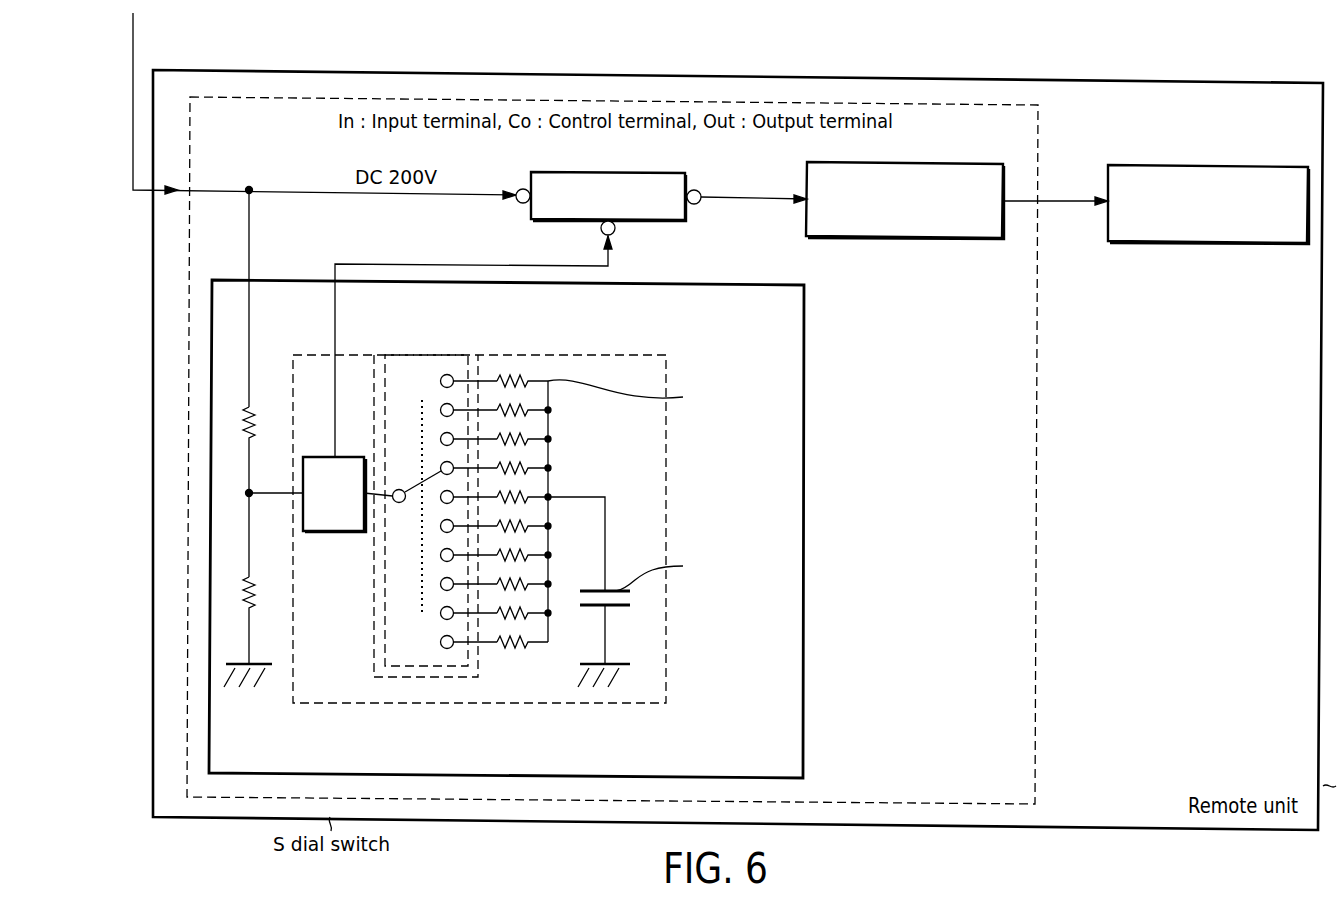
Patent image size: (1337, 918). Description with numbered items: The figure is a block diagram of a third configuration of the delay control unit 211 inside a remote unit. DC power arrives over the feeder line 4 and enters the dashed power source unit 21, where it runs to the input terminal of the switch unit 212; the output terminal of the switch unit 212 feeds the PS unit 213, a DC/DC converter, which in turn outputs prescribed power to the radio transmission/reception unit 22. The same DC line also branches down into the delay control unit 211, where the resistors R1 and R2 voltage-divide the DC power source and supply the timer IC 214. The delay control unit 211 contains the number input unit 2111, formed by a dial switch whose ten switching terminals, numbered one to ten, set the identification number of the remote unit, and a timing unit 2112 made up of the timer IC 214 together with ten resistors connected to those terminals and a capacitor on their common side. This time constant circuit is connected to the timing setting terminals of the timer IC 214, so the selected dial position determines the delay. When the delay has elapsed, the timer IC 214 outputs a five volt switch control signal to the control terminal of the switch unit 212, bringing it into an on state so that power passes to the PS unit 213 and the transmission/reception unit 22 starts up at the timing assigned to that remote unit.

The feeder line 4 is at (133, 28).
The power source unit 21 is at (1036, 758).
The radio transmission/reception unit 22 is at (1240, 165).
The delay control unit 211 is at (806, 727).
The switch unit 212 is at (620, 172).
The PS unit 213 is at (935, 162).
The timer IC 214 is at (333, 533).
The number input unit 2111 is at (403, 355).
The timing unit 2112 is at (455, 703).
The resistor R1 is at (264, 341).
The resistor R2 is at (264, 578).